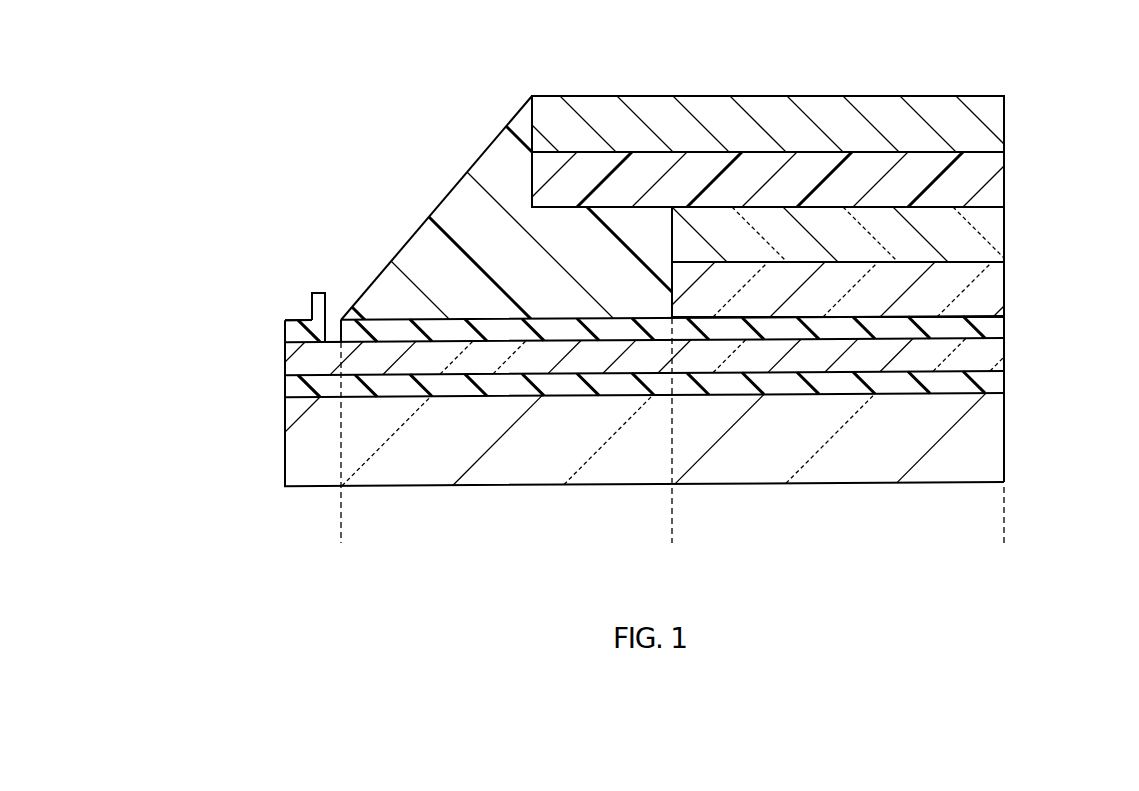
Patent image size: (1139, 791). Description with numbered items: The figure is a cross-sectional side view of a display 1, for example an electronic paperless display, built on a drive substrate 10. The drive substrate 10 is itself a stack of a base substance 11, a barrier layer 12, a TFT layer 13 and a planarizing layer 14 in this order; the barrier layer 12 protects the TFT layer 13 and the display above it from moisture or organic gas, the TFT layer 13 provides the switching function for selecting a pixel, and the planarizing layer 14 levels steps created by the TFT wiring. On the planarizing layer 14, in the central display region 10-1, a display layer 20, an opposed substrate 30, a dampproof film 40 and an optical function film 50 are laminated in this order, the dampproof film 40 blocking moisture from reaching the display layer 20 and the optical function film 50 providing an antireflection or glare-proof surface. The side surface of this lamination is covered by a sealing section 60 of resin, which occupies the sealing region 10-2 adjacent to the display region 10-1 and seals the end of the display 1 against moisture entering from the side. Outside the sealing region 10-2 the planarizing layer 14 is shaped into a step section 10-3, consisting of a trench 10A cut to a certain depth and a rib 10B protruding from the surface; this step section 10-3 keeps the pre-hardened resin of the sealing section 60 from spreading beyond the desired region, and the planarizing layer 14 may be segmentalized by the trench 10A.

The display 1 is at (436, 57).
The drive substrate 10 is at (624, 342).
The base substance 11 is at (1004, 433).
The barrier layer 12 is at (1004, 378).
The TFT layer 13 is at (1004, 349).
The planarizing layer 14 is at (1004, 323).
The trench 10A is at (320, 351).
The rib 10B is at (298, 281).
The display region 10-1 is at (1004, 545).
The sealing region 10-2 is at (672, 545).
The step section 10-3 is at (204, 250).
The display layer 20 is at (1004, 286).
The opposed substrate 30 is at (1004, 229).
The dampproof film 40 is at (1004, 178).
The optical function film 50 is at (1004, 125).
The sealing section 60 is at (453, 207).